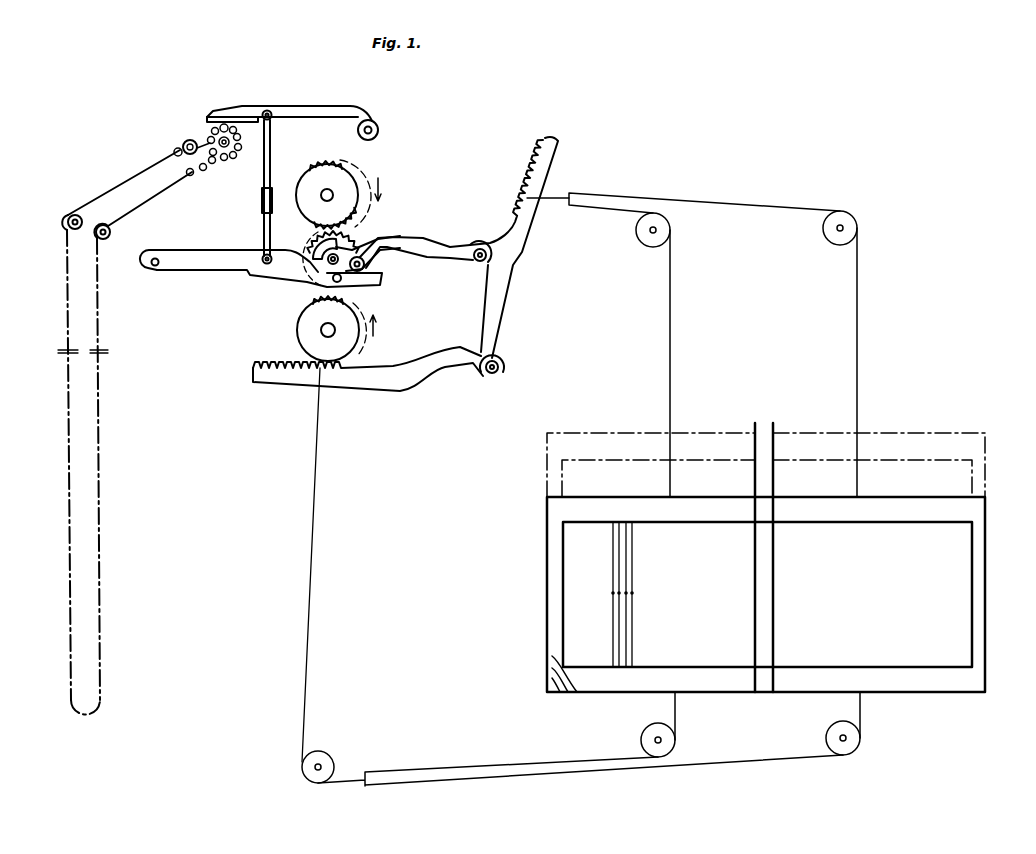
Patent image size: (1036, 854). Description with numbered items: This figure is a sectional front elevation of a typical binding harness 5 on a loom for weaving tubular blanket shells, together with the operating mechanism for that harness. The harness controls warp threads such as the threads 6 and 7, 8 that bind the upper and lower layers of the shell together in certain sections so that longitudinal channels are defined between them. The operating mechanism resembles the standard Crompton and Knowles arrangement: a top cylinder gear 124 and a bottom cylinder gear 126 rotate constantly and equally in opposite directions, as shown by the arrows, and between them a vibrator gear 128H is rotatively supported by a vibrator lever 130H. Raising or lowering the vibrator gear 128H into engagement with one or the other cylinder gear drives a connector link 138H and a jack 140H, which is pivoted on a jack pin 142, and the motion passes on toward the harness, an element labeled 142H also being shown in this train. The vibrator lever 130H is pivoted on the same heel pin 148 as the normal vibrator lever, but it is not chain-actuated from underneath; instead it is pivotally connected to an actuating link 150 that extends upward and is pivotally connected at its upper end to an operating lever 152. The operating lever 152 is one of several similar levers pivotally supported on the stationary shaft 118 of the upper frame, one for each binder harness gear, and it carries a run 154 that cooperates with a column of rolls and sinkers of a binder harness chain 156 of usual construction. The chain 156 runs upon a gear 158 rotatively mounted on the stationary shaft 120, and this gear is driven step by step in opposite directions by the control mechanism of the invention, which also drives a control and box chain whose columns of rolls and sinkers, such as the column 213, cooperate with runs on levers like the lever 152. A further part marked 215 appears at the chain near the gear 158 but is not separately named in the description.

The binding harness 5 is at (547, 598).
The warp thread 6 is at (547, 660).
The warp thread 7 is at (547, 672).
The warp thread 8 is at (547, 686).
The stationary shaft 118 is at (378, 128).
The stationary shaft 120 is at (186, 155).
The top cylinder gear 124 is at (342, 176).
The bottom cylinder gear 126 is at (299, 328).
The vibrator gear 128H is at (357, 235).
The vibrator lever 130H is at (201, 251).
The connector link 138H is at (461, 246).
The jack 140H is at (497, 308).
The jack pin 142 is at (492, 378).
The cable 142H is at (324, 556).
The heel pin 148 is at (155, 270).
The actuating link 150 is at (272, 146).
The operating lever 152 is at (280, 108).
The run 154 is at (207, 117).
The binder harness chain 156 is at (110, 190).
The gear 158 is at (207, 138).
The column of rolls and sinkers 213 is at (174, 152).
The chain link 215 is at (224, 124).